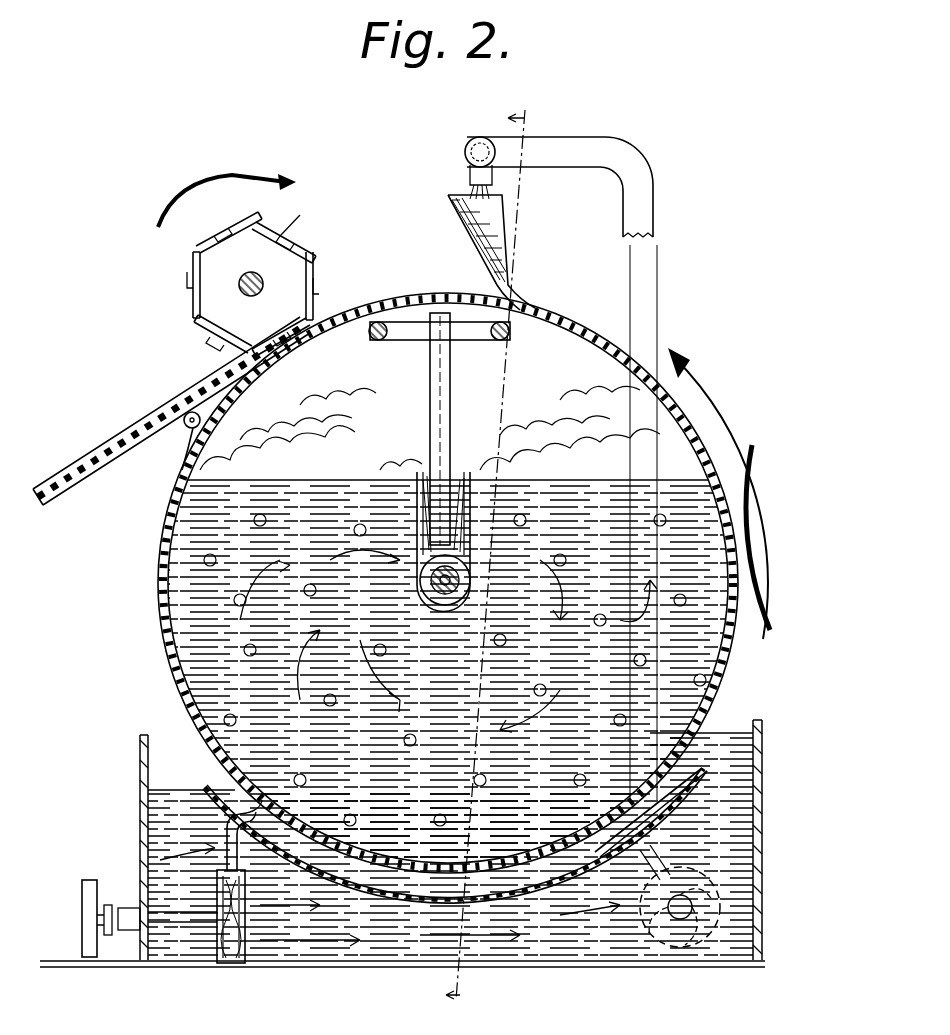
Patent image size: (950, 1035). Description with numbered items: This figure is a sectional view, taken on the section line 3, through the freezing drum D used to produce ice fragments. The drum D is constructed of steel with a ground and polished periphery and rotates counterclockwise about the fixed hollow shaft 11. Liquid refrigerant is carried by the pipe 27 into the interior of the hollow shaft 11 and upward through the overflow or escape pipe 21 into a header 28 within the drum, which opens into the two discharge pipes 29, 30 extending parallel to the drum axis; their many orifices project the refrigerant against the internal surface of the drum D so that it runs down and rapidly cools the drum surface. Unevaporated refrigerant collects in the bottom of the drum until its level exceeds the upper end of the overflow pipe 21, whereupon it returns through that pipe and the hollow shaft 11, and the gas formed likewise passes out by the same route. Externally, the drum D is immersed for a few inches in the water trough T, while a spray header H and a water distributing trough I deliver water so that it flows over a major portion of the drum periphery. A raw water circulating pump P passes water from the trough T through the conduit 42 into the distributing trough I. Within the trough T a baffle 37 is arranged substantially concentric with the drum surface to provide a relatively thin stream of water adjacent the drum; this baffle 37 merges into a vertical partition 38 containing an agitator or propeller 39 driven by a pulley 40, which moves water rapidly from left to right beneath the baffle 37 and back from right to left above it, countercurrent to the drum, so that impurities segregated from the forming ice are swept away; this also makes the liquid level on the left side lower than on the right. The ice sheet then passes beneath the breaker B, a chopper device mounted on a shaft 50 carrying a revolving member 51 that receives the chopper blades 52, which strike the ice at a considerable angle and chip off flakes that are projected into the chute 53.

The water trough T is at (626, 930).
The refrigerant discharge pipe 29 is at (522, 322).
The baffle 37 is at (420, 904).
The conduit 42 is at (656, 198).
The water distributing trough I is at (505, 216).
The section line 3 is at (496, 562).
The header 28 is at (470, 340).
The refrigerant discharge pipe 30 is at (380, 322).
The pipe 27 is at (452, 405).
The overflow or escape pipe 21 is at (470, 474).
The hollow shaft 11 is at (470, 587).
The chute 53 is at (112, 440).
The spray header H is at (184, 432).
The breaker B is at (248, 265).
The shaft 50 is at (262, 280).
The revolving member 51 is at (210, 260).
The chopper blades 52 is at (190, 320).
The drum D is at (736, 520).
The pulley 40 is at (104, 866).
The agitator or propeller 39 is at (232, 962).
The vertical partition 38 is at (226, 826).
The raw water circulating pump P is at (766, 890).